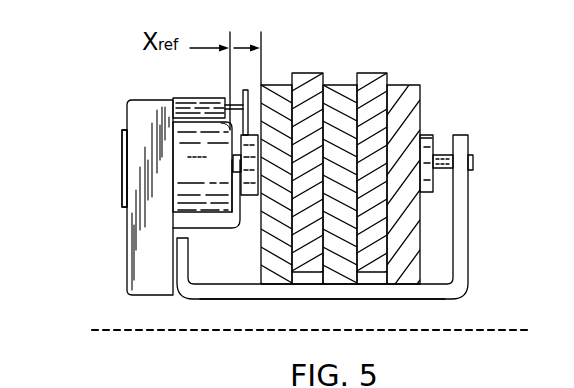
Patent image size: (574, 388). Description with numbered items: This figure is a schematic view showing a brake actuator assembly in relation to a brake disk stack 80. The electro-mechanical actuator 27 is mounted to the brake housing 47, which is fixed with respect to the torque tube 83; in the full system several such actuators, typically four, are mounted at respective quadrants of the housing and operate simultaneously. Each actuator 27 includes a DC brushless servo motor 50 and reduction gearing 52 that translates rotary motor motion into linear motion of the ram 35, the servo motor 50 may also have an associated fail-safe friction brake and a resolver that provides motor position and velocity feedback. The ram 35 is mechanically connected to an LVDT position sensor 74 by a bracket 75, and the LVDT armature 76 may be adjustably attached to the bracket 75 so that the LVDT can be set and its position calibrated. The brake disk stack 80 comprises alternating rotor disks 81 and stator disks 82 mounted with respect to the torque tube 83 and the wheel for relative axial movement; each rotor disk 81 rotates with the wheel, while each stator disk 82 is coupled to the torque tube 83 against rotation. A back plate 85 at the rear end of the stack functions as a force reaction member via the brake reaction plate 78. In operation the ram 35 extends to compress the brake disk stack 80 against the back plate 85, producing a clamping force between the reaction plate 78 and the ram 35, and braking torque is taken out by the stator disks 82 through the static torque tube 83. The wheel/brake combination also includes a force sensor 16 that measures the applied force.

The force sensor 16 is at (173, 123).
The electro-mechanical actuator 27 is at (112, 167).
The ram 35 is at (173, 228).
The housing 47 is at (120, 115).
The DC brushless servo motor 50 is at (64, 201).
The reduction gearing 52 is at (125, 205).
The LVDT position sensor 74 is at (182, 98).
The bracket 75 is at (249, 90).
The LVDT armature 76 is at (238, 101).
The brake reaction plate 78 is at (434, 134).
The brake disk stack 80 is at (414, 55).
The rotor disk 81 is at (360, 74).
The stator disk 82 is at (282, 287).
The torque tube 83 is at (423, 300).
The back plate 85 is at (482, 227).